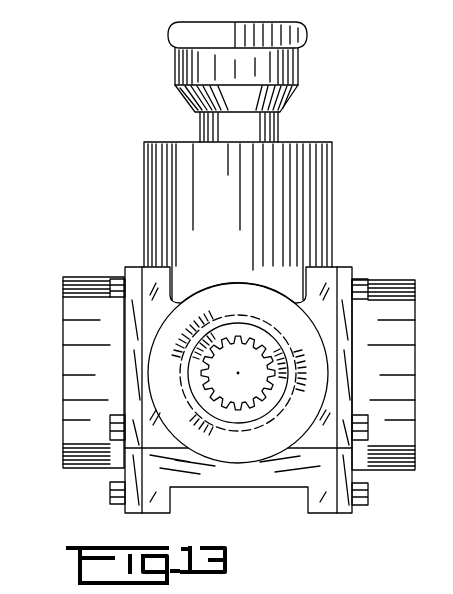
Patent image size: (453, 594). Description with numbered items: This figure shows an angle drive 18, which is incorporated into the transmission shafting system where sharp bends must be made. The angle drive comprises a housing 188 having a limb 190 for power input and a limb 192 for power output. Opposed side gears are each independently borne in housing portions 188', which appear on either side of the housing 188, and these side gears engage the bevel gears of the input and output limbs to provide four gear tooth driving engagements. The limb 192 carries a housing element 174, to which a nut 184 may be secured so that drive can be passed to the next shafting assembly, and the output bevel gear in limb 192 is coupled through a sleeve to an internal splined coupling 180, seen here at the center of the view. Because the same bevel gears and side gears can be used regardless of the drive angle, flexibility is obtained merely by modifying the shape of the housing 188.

The angle drive 18 is at (249, 270).
The housing element 174 is at (254, 432).
The internal splined coupling 180 is at (222, 336).
The nut 184 is at (300, 66).
The housing 188 is at (238, 393).
The housing portions 188' is at (249, 375).
The limb 190 is at (333, 152).
The limb 192 is at (325, 340).